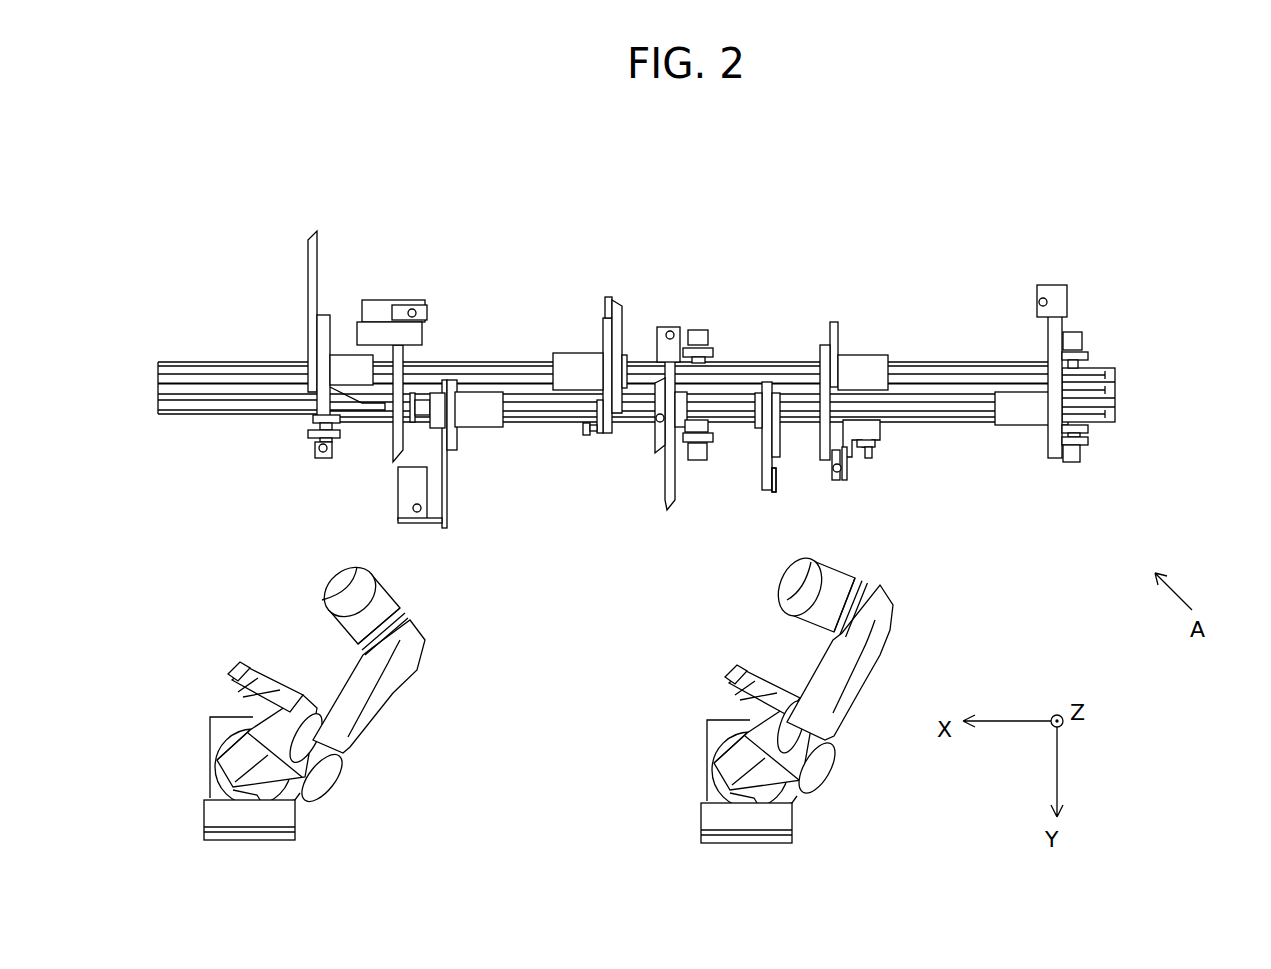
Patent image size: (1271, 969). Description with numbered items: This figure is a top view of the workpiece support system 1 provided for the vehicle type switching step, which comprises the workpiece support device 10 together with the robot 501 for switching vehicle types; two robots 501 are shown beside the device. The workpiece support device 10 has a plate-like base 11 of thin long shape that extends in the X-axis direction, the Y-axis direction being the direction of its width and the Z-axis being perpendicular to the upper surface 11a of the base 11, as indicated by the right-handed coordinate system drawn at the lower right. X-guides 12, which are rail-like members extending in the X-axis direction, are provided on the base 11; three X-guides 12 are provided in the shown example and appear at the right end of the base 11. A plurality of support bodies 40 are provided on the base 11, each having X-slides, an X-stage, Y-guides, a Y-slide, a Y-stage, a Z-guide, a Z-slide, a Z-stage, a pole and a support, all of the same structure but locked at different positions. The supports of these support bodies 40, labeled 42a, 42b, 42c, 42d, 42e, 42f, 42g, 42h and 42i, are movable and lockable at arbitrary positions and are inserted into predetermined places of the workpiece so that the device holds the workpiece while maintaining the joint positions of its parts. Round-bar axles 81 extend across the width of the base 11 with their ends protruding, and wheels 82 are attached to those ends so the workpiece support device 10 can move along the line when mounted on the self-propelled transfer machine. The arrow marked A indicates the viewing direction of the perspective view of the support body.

The workpiece support system 1 is at (721, 148).
The workpiece support device 10 is at (790, 236).
The base 11 is at (522, 358).
The upper surface 11a is at (963, 400).
The X-guides 12 is at (1100, 377).
The support bodies 40 is at (318, 260).
The support 42a is at (317, 448).
The support 42b is at (413, 310).
The support 42c is at (421, 508).
The support 42d is at (587, 432).
The support 42e is at (673, 332).
The support 42f is at (657, 421).
The support 42g is at (767, 493).
The support 42h is at (841, 468).
The support 42i is at (1040, 302).
The axle 81 is at (1080, 432).
The wheels 82 is at (1080, 458).
The robot 501 is at (430, 606).